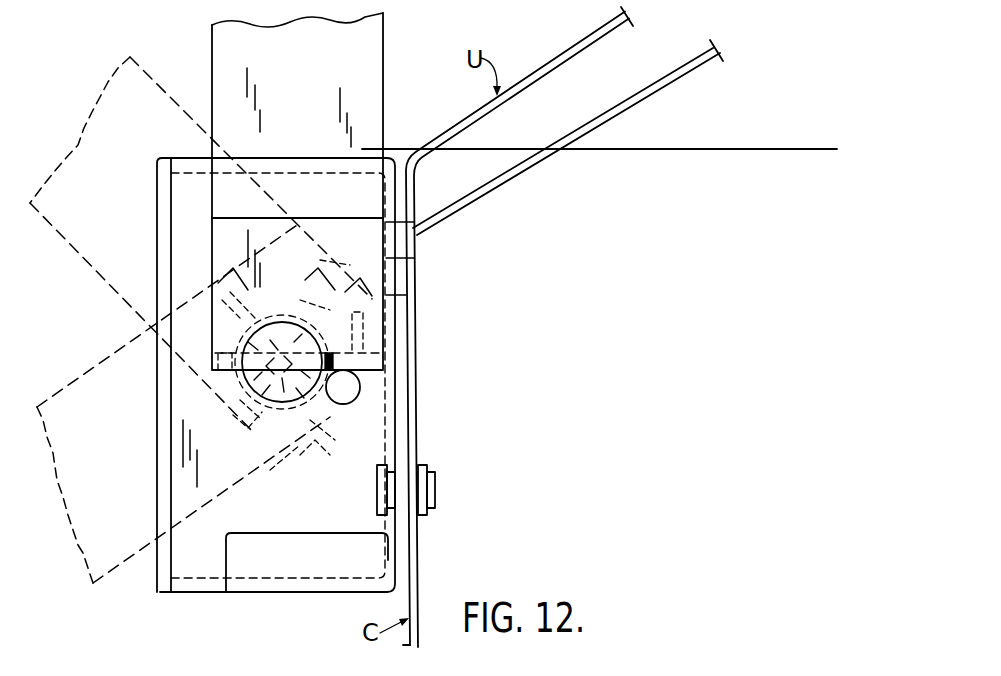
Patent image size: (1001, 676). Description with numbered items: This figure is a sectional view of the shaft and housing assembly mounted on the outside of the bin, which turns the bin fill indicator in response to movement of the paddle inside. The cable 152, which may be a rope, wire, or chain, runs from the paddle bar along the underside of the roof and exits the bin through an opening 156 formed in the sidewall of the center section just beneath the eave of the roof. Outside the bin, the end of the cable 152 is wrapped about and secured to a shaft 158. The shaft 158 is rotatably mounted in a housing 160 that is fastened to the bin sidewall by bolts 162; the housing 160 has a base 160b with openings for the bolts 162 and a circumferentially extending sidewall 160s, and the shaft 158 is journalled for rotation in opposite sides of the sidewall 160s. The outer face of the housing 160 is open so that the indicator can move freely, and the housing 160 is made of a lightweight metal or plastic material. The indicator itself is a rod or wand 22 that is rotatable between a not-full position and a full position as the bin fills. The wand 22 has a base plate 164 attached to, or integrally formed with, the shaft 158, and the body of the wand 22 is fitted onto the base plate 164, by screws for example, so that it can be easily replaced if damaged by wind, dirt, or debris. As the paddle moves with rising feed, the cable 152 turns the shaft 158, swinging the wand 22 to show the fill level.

The rod or wand 22 is at (385, 62).
The cable 152 is at (544, 164).
The opening 156 is at (398, 263).
The shaft 158 is at (270, 412).
The housing 160 is at (178, 152).
The base 160b is at (412, 398).
The sidewall 160s is at (316, 595).
The bolts 162 is at (430, 470).
The base plate 164 is at (372, 247).